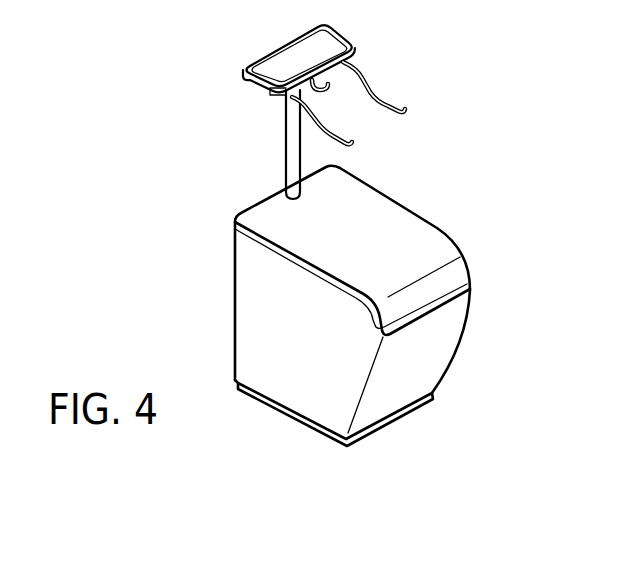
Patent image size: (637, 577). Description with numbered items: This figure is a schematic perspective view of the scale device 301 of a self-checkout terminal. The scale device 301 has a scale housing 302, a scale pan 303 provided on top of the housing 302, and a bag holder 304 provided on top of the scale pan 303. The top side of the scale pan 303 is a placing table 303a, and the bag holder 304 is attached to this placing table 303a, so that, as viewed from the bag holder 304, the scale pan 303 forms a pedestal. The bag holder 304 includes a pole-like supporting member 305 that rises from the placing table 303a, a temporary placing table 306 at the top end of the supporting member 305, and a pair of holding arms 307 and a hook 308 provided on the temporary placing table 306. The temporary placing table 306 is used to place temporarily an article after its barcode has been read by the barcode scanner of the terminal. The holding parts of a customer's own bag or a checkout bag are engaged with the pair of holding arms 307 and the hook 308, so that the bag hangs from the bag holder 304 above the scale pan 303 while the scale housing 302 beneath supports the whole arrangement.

The scale device 301 is at (216, 213).
The scale housing 302 is at (443, 353).
The scale pan 303 is at (402, 218).
The placing table 303a is at (428, 242).
The bag holder 304 is at (369, 39).
The pole-like supporting member 305 is at (288, 150).
The temporary placing table 306 is at (287, 53).
The holding arms 307 is at (397, 113).
The hook 308 is at (328, 92).